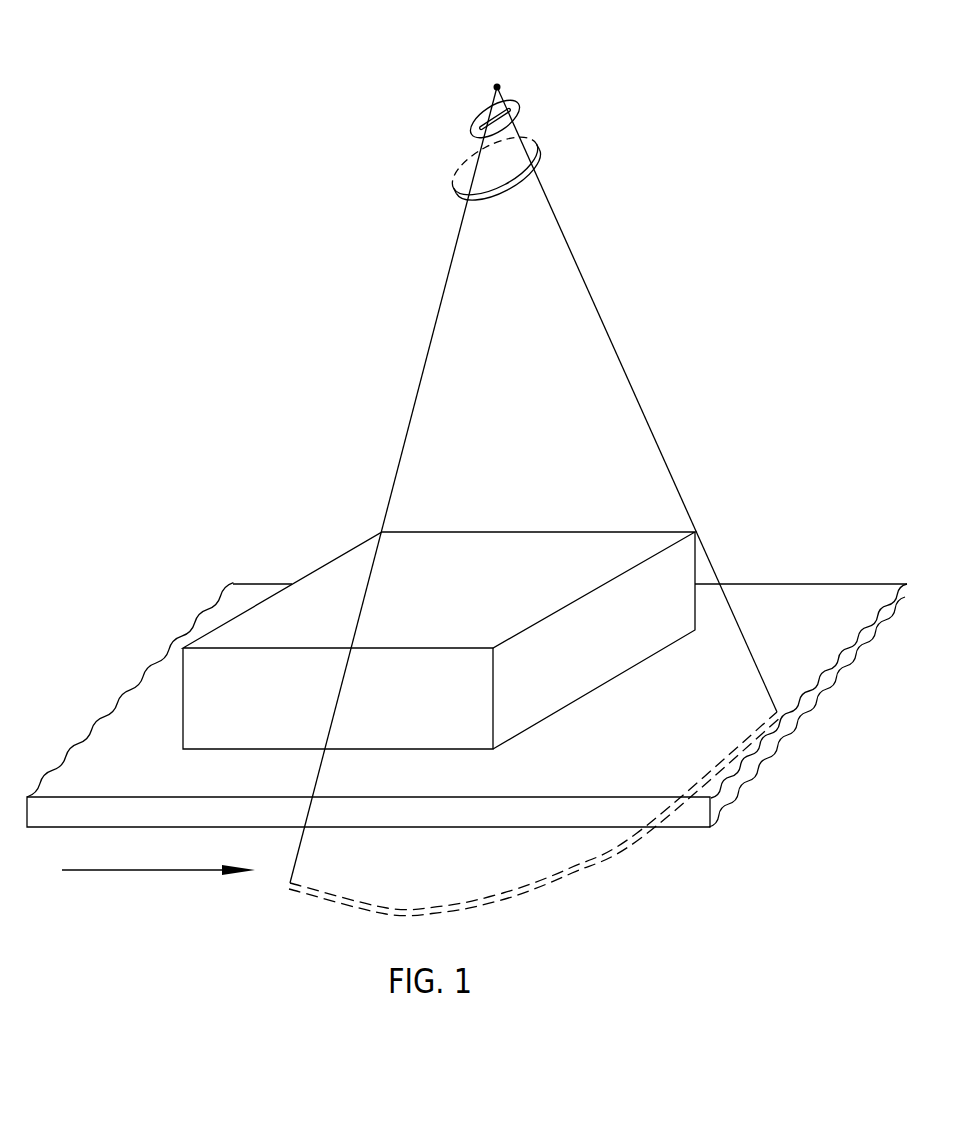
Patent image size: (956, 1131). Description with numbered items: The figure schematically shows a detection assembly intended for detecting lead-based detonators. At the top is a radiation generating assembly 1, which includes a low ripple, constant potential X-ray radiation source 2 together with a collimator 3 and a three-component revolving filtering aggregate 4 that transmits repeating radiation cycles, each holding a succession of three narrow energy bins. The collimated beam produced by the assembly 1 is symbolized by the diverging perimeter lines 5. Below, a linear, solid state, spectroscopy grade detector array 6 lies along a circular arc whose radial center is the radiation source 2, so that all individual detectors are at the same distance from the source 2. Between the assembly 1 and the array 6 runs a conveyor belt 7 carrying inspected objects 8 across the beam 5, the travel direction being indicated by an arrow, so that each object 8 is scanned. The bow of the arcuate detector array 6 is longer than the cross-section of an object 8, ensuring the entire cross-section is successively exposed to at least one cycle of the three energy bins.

The radiation generating assembly 1 is at (543, 102).
The X-ray radiation source 2 is at (494, 85).
The collimator 3 is at (472, 114).
The revolving filtering aggregate 4 is at (460, 165).
The perimeter lines 5 is at (418, 383).
The detector array 6 is at (585, 863).
The conveyor belt 7 is at (760, 598).
The inspected object 8 is at (507, 540).